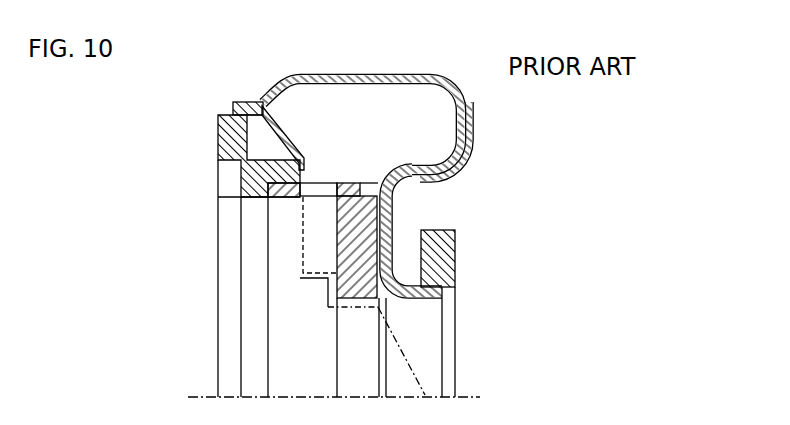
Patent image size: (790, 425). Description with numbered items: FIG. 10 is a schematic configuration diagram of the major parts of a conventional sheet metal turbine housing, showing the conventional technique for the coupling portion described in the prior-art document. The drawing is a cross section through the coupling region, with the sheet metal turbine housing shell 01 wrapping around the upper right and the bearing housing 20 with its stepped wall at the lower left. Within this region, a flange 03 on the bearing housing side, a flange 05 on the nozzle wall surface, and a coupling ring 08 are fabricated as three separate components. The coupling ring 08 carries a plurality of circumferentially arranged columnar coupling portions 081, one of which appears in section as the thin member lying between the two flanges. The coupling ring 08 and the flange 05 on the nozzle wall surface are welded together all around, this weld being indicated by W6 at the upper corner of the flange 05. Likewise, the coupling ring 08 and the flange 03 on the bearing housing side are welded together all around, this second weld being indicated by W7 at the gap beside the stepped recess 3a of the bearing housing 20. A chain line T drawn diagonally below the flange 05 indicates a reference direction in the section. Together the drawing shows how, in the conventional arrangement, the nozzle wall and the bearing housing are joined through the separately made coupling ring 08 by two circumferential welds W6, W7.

The cover 01 is at (368, 74).
The flange on the bearing housing side 03 is at (217, 137).
The columnar coupling portion 081 is at (314, 189).
The coupling ring 08 is at (348, 182).
The weld W6 is at (358, 180).
The flange on the nozzle wall surface 05 is at (337, 251).
The recess 3a is at (279, 200).
The housing 20 is at (238, 199).
The weld W7 is at (264, 204).
The tangent line T is at (388, 323).